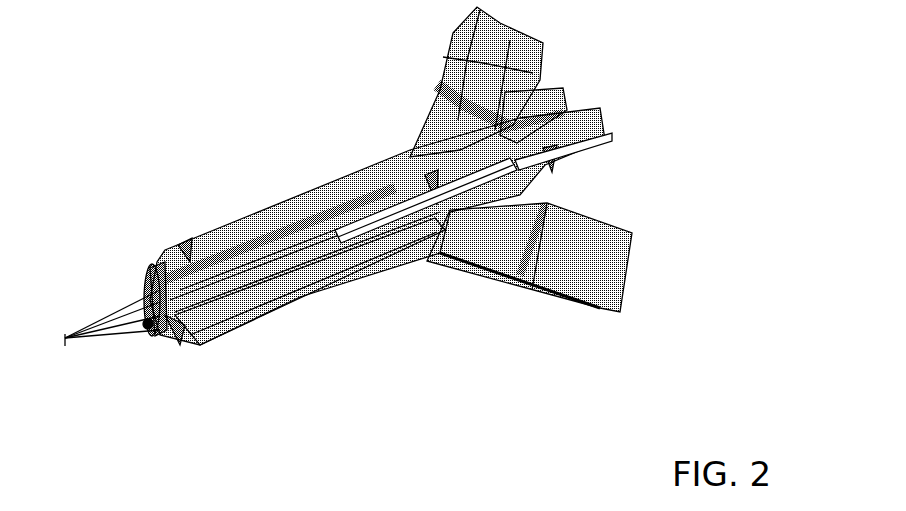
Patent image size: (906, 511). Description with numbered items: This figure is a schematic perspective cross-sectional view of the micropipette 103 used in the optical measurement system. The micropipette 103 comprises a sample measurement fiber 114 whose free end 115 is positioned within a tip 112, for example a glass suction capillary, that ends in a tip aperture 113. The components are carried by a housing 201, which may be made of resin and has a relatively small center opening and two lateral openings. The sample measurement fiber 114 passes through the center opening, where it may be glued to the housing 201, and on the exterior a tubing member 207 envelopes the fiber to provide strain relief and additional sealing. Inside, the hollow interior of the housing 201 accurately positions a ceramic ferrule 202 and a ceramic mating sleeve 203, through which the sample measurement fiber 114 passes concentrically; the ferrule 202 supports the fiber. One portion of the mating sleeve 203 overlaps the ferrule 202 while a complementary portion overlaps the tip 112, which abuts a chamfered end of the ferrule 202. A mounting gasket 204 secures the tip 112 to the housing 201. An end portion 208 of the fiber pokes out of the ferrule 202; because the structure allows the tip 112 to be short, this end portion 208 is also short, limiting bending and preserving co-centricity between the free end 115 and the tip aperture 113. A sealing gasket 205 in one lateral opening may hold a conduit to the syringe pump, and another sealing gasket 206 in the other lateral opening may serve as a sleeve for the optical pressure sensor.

The micropipette 103 is at (121, 38).
The tip 112 is at (186, 372).
The tip aperture 113 is at (69, 381).
The sample measurement fiber 114 is at (448, 151).
The free end 115 is at (108, 298).
The housing 201 is at (374, 232).
The ferrule 202 is at (347, 190).
The mating sleeve 203 is at (310, 308).
The mounting gasket 204 is at (143, 268).
The sealing gasket 205 is at (529, 320).
The sealing gasket 206 is at (402, 82).
The tubing member 207 is at (635, 140).
The end portion 208 is at (272, 288).